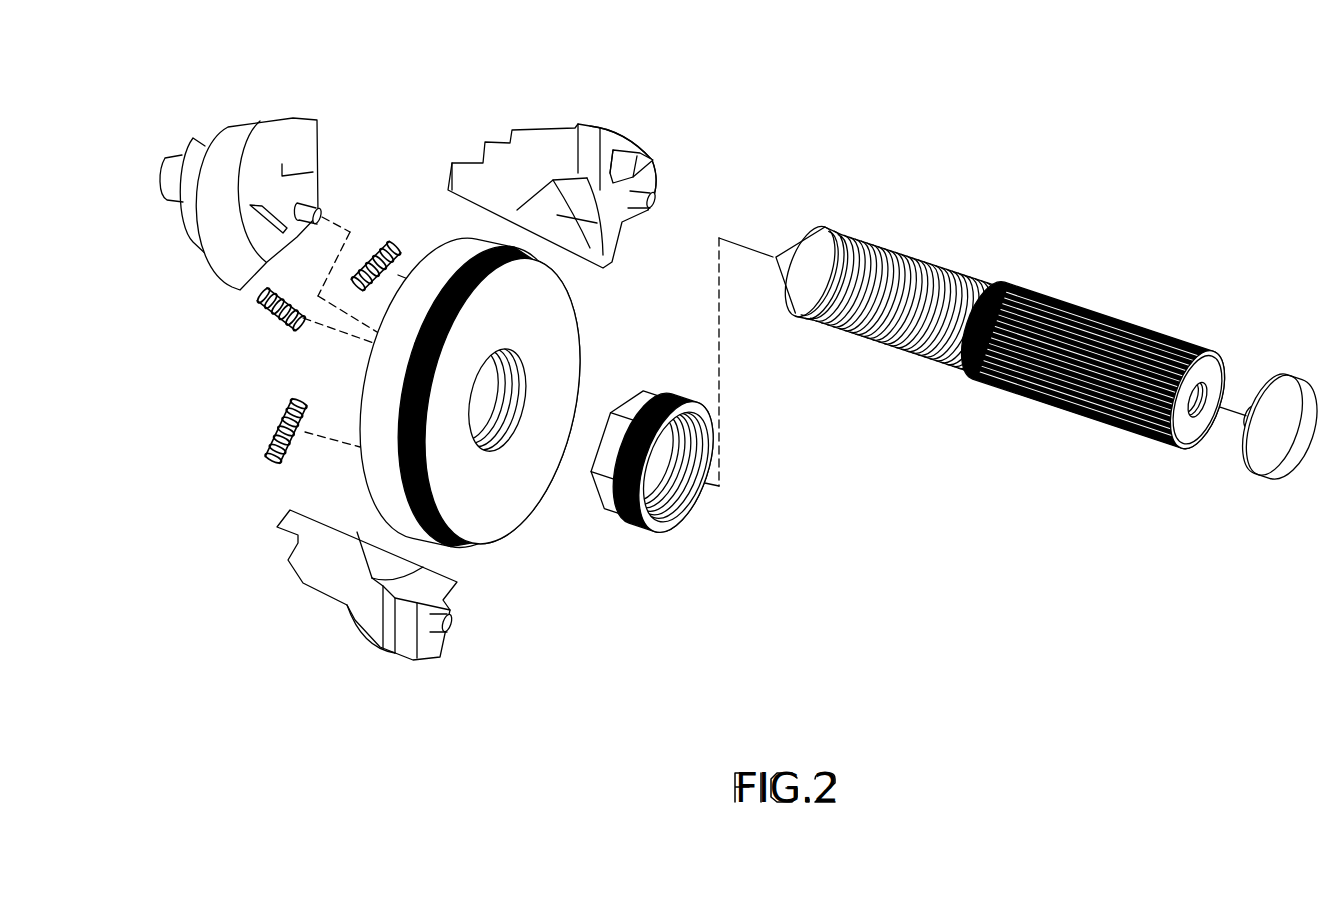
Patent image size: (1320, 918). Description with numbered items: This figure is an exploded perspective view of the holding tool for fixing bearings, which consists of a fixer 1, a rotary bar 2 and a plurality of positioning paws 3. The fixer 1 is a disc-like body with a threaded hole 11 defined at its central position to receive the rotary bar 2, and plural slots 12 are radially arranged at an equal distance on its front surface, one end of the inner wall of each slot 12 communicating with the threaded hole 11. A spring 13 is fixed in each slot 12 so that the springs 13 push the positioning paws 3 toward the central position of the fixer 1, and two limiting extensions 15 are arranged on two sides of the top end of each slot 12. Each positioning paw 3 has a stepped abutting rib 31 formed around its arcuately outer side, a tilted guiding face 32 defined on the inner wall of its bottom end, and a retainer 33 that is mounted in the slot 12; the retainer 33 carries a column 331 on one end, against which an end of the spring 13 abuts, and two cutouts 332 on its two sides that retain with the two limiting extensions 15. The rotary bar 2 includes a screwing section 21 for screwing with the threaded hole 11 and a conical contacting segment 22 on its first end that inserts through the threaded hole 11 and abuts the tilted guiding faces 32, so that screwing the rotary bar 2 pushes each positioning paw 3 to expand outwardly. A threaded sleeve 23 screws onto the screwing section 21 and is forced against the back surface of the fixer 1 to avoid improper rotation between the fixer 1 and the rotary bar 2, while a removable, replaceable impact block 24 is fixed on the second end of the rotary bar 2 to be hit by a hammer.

The fixer 1 is at (421, 438).
The threaded hole 11 is at (463, 507).
The slot 12 is at (383, 348).
The spring 13 is at (382, 243).
The limiting extension 15 is at (377, 353).
The rotary bar 2 is at (1040, 390).
The screwing section 21 is at (947, 260).
The conical contacting segment 22 is at (777, 286).
The threaded sleeve 23 is at (632, 537).
The impact block 24 is at (1250, 467).
The positioning paw 3 is at (601, 199).
The stepped abutting rib 31 is at (467, 162).
The tilted guiding face 32 is at (560, 213).
The retainer 33 is at (657, 163).
The column 331 is at (663, 207).
The cutout 332 is at (625, 152).